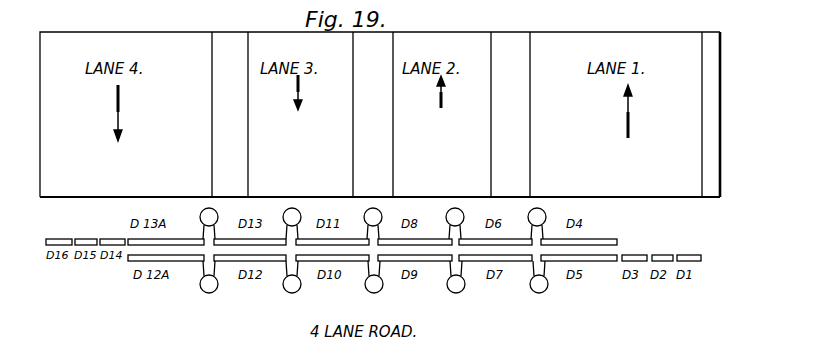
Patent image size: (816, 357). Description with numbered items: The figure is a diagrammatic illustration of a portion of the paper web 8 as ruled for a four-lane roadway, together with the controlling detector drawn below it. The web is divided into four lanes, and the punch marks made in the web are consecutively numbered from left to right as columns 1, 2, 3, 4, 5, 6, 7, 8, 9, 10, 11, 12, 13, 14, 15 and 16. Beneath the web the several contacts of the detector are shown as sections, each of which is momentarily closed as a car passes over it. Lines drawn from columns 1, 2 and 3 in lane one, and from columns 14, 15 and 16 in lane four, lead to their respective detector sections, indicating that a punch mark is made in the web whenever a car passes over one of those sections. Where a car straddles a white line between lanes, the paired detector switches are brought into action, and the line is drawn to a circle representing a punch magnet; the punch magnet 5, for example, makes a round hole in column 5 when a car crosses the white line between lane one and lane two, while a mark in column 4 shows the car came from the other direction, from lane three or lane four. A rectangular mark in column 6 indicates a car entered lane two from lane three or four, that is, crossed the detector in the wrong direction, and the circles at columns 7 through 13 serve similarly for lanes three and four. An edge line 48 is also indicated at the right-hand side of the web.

The column 1 is at (688, 255).
The column 2 is at (658, 255).
The column 3 is at (637, 255).
The column 4 is at (545, 216).
The punch magnet 5 is at (530, 285).
The column 6 is at (463, 216).
The detector switch 7 is at (448, 286).
The paper web 8 is at (718, 97).
The punch mark column 9 is at (366, 287).
The punch mark column 10 is at (300, 288).
The punch mark column 11 is at (284, 215).
The punch mark column 12 is at (217, 287).
The punch mark column 13 is at (200, 215).
The column 14 is at (111, 239).
The column 15 is at (88, 239).
The column 16 is at (60, 239).
The lane edge line 48 is at (714, 133).